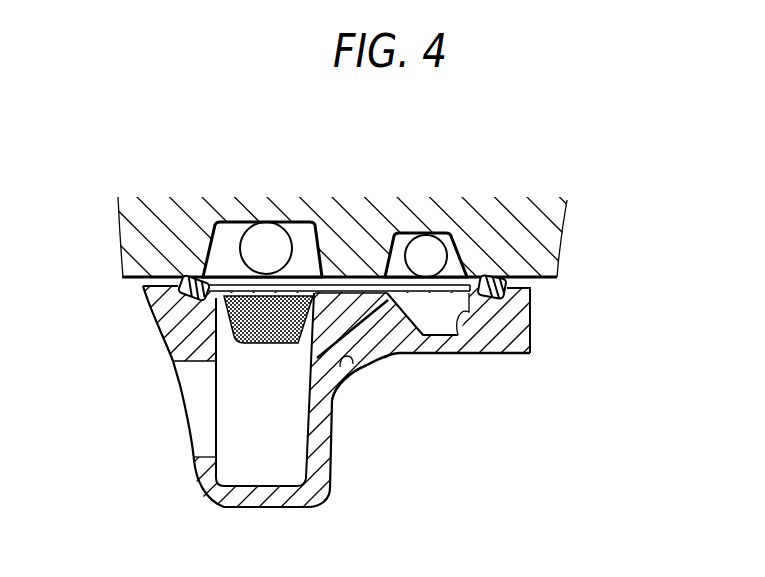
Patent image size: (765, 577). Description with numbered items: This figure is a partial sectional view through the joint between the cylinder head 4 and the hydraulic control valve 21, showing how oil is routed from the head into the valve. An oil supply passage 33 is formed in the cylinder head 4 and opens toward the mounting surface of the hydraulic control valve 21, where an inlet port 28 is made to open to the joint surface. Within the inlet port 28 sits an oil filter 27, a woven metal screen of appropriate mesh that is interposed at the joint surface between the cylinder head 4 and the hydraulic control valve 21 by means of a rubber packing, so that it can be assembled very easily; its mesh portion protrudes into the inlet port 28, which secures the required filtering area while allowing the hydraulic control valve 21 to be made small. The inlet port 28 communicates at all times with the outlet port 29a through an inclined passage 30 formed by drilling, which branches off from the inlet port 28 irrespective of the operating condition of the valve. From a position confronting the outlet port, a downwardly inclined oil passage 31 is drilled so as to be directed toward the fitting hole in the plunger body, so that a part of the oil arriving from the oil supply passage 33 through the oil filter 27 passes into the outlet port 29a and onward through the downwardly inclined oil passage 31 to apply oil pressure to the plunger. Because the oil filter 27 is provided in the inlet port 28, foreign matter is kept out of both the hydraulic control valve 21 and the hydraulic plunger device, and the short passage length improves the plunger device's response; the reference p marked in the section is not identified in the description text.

The cylinder head 4 is at (553, 247).
The oil supply passage 33 is at (247, 235).
The downwardly inclined oil passage 31 is at (418, 243).
The hydraulic control valve 21 is at (322, 477).
The inlet port 28 is at (285, 408).
The oil filter 27 is at (246, 346).
The inclined passage 30 is at (350, 360).
The outlet port 29a is at (464, 347).
The clearance p is at (172, 327).